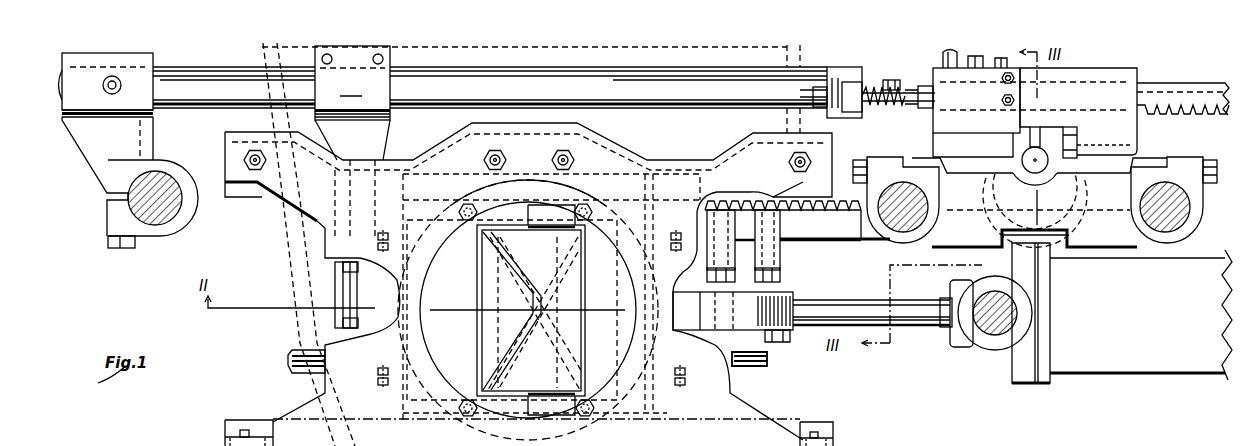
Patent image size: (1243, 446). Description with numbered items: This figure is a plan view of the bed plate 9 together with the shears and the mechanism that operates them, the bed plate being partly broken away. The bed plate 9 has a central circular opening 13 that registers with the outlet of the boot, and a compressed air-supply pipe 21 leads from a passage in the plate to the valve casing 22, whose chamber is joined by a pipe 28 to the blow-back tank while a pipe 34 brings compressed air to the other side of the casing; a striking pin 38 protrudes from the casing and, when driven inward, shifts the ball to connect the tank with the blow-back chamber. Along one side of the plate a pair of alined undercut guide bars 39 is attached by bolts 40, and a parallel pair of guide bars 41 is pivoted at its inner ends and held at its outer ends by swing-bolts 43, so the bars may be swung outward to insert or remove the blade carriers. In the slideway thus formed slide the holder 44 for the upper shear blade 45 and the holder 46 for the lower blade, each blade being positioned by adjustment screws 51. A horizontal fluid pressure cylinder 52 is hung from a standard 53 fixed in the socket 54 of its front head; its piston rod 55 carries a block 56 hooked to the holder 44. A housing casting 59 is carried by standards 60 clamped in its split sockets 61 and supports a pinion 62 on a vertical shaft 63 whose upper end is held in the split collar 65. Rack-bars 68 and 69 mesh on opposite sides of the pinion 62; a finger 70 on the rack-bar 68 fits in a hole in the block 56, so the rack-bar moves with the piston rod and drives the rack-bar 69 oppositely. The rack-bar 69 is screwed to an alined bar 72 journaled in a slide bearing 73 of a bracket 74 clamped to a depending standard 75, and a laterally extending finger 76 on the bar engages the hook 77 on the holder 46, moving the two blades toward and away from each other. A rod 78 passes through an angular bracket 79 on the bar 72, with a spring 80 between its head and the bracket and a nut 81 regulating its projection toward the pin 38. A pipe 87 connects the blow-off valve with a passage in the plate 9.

The bed plate 9 is at (754, 409).
The central circular opening 13 is at (528, 310).
The compressed air-supply pipe 21 is at (942, 60).
The valve casing 22 is at (1031, 100).
The pipe 28 is at (982, 70).
The pipe 34 is at (1030, 72).
The striking pin 38 is at (917, 110).
The undercut guide bars 39 is at (253, 200).
The bolts 40 is at (245, 157).
The guide bars 41 is at (232, 420).
The swing-bolts 43 is at (524, 439).
The holder 44 is at (543, 310).
The upper shear blade 45 is at (532, 311).
The holder 46 is at (510, 310).
The adjustment screws 51 is at (525, 309).
The fluid pressure cylinder 52 is at (1122, 313).
The standard 53 is at (988, 340).
The socket 54 is at (993, 352).
The piston rod 55 is at (850, 300).
The block 56 is at (792, 330).
The housing casting 59 is at (1038, 210).
The standards 60 is at (1001, 212).
The split sockets 61 is at (1035, 200).
The pinion 62 is at (1088, 143).
The shaft 63 is at (1022, 160).
The split collar 65 is at (1070, 127).
The rack-bar 68 is at (783, 241).
The rack-bar 69 is at (1168, 83).
The finger 70 is at (755, 291).
The alined bar 72 is at (668, 112).
The slide bearing 73 is at (106, 85).
The bracket 74 is at (107, 176).
The depending standard 75 is at (178, 221).
The laterally extending finger 76 is at (390, 144).
The hook 77 is at (336, 321).
The rod 78 is at (895, 80).
The angular bracket 79 is at (848, 82).
The spring 80 is at (872, 109).
The nut 81 is at (838, 113).
The pipe 87 is at (296, 351).